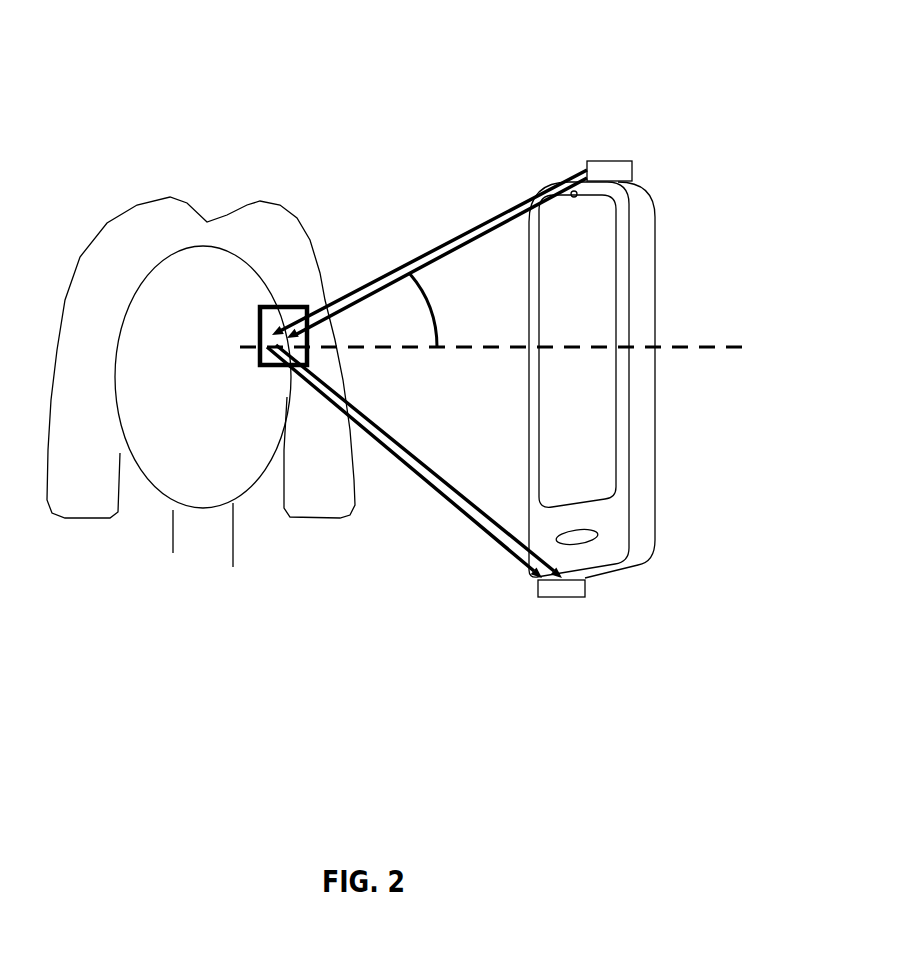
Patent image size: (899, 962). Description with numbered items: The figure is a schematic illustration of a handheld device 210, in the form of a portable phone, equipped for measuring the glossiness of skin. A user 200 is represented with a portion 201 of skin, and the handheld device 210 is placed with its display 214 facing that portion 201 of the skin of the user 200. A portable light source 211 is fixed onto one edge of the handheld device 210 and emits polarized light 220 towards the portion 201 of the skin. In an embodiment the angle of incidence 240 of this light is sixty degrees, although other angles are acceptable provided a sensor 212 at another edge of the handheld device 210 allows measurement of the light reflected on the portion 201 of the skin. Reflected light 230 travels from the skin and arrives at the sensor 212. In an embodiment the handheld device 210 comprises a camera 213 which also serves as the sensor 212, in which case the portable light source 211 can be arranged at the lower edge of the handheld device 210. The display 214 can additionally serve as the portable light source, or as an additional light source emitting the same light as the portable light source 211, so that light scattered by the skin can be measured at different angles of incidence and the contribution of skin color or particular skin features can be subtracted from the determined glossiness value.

The user 200 is at (118, 200).
The portion of skin 201 is at (271, 316).
The handheld device 210 is at (644, 585).
The portable light source 211 is at (603, 161).
The sensor 212 is at (563, 587).
The camera 213 is at (572, 192).
The display 214 is at (557, 368).
The polarized light 220 is at (487, 213).
The reflected light 230 is at (483, 530).
The angle of incidence 240 is at (415, 310).